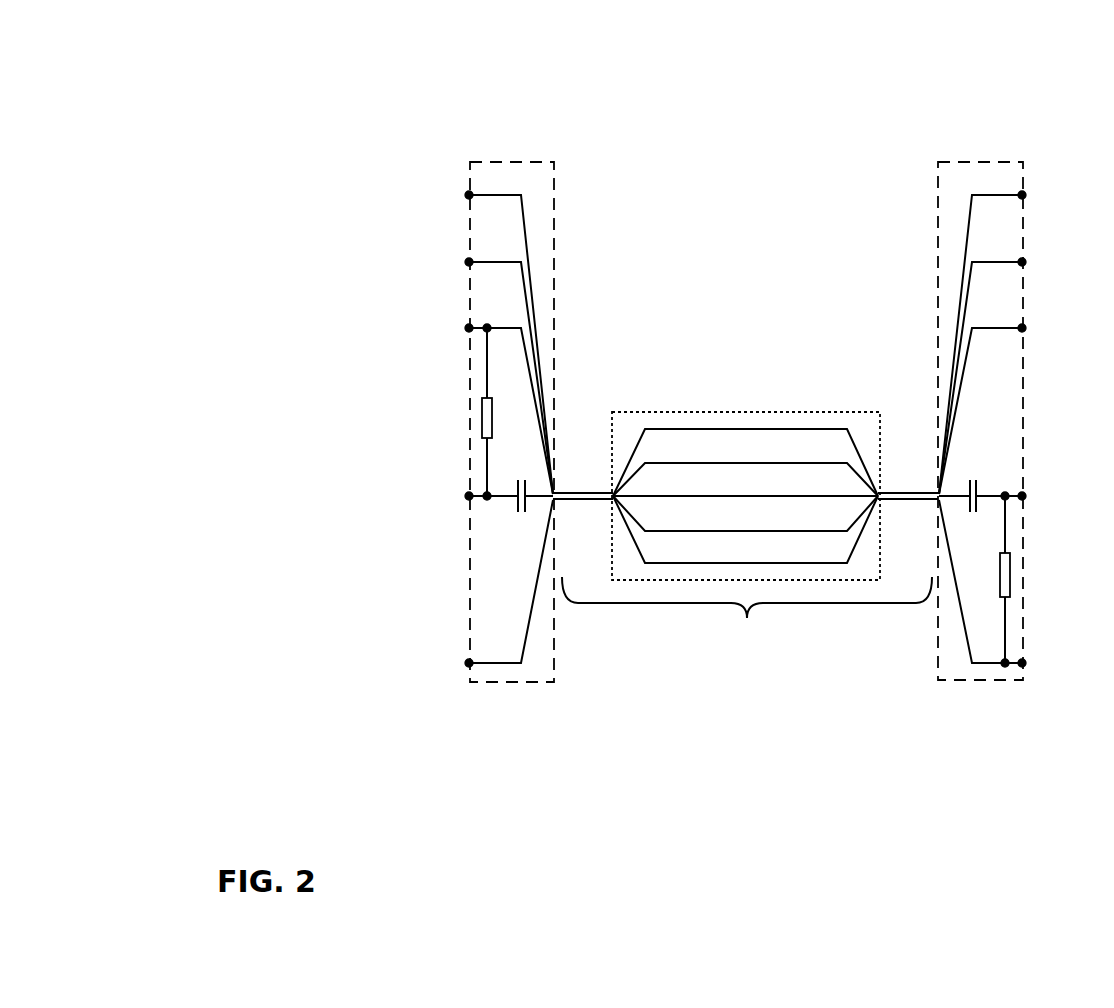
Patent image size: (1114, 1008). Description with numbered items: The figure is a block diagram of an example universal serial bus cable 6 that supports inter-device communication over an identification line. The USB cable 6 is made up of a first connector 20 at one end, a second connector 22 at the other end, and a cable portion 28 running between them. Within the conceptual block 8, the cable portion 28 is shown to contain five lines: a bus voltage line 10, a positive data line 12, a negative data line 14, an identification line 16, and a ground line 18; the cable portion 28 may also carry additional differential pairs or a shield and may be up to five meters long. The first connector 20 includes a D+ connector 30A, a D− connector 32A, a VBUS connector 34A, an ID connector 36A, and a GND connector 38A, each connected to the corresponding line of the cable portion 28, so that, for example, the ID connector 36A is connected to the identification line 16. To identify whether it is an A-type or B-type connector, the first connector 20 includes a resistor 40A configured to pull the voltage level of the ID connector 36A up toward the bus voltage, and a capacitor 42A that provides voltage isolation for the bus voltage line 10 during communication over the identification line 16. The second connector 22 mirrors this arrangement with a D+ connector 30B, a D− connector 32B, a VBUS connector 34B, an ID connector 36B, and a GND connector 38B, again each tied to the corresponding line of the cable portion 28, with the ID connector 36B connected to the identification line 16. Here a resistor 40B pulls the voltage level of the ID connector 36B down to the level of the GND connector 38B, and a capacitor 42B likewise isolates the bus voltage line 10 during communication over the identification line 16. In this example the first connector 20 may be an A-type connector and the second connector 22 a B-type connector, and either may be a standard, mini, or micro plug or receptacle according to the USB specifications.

The universal serial bus (USB) cable 6 is at (997, 86).
The conceptual block 8 is at (828, 410).
The bus voltage (VBUS) line 10 is at (735, 428).
The positive data (D+) line 12 is at (735, 462).
The negative data (D−) line 14 is at (735, 495).
The identification (ID) line 16 is at (735, 530).
The ground (GND) line 18 is at (735, 562).
The first connector 20 is at (553, 161).
The second connector 22 is at (940, 161).
The cable portion 28 is at (747, 612).
The D+ connector 30A is at (467, 195).
The D− connector 32A is at (467, 262).
The VBUS connector 34A is at (467, 328).
The ID connector 36A is at (467, 496).
The GND connector 38A is at (467, 663).
The resistor 40A is at (491, 440).
The capacitor 42A is at (519, 514).
The D+ connector 30B is at (1024, 195).
The D− connector 32B is at (1024, 262).
The VBUS connector 34B is at (1024, 328).
The ID connector 36B is at (1024, 496).
The GND connector 38B is at (1024, 663).
The resistor 40B is at (1002, 554).
The capacitor 42B is at (977, 486).